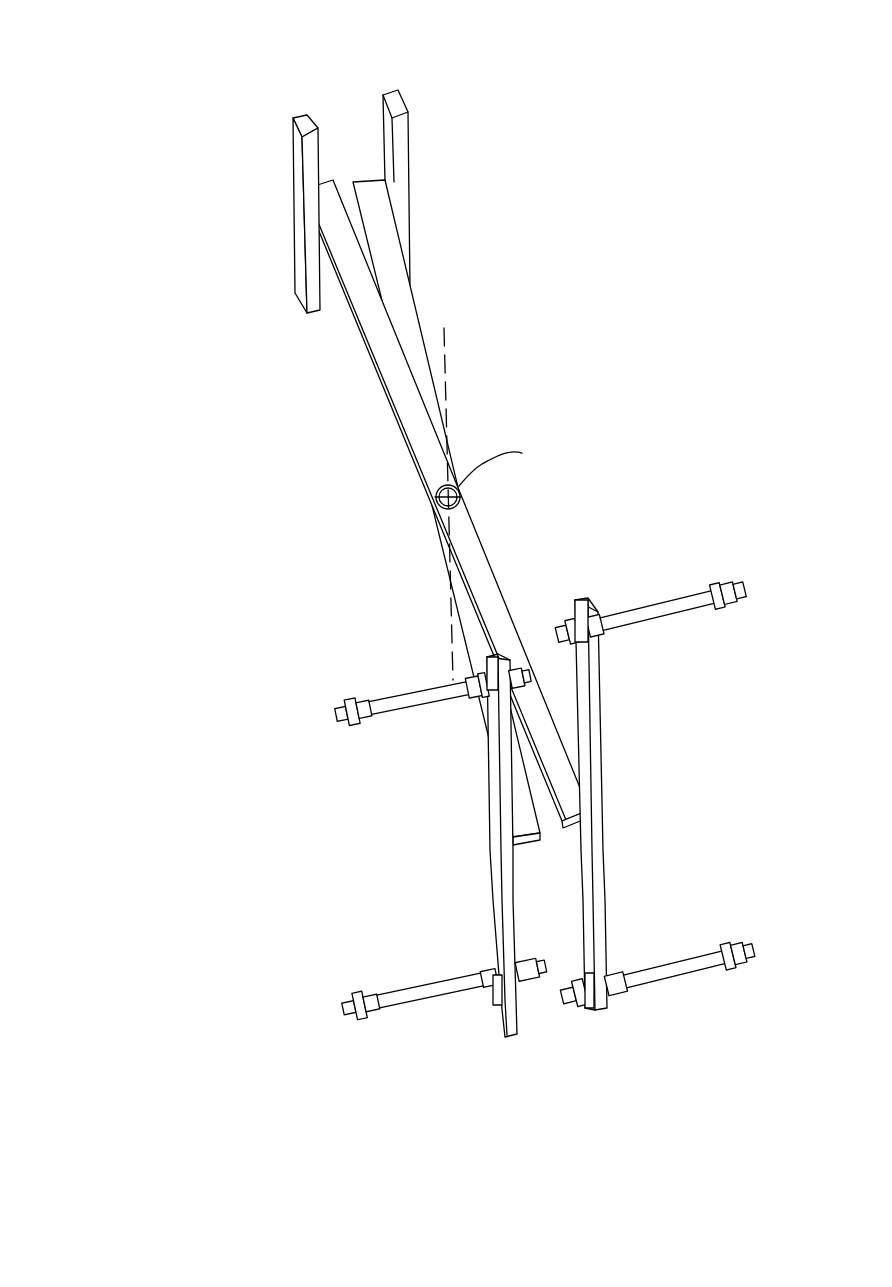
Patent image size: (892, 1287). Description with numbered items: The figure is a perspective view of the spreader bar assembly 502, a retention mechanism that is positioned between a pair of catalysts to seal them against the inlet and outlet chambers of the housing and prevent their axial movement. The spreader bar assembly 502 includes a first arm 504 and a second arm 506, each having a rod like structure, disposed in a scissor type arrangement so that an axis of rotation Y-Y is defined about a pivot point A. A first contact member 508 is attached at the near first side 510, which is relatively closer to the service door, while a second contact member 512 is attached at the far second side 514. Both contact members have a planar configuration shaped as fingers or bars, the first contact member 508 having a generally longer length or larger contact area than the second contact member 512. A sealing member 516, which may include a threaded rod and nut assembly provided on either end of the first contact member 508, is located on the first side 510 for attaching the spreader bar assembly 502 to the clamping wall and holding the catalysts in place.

The spreader bar assembly 502 is at (635, 388).
The first arm 504 is at (331, 197).
The second arm 506 is at (372, 197).
The first contact member 508 is at (497, 870).
The first side 510 is at (631, 1040).
The second contact member 512 is at (303, 148).
The second side 514 is at (187, 133).
The sealing member 516 is at (399, 722).